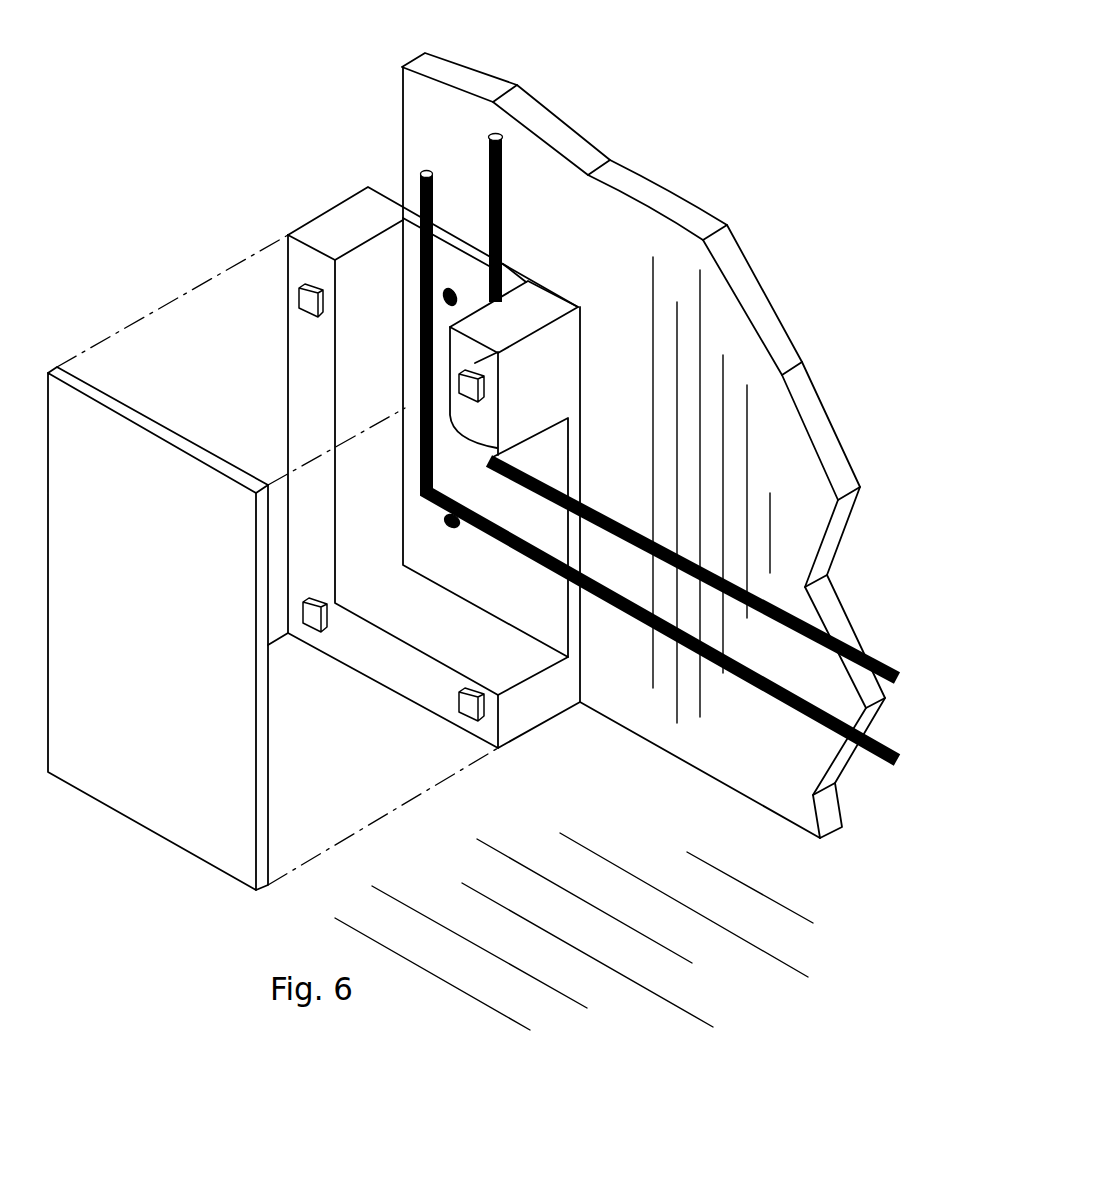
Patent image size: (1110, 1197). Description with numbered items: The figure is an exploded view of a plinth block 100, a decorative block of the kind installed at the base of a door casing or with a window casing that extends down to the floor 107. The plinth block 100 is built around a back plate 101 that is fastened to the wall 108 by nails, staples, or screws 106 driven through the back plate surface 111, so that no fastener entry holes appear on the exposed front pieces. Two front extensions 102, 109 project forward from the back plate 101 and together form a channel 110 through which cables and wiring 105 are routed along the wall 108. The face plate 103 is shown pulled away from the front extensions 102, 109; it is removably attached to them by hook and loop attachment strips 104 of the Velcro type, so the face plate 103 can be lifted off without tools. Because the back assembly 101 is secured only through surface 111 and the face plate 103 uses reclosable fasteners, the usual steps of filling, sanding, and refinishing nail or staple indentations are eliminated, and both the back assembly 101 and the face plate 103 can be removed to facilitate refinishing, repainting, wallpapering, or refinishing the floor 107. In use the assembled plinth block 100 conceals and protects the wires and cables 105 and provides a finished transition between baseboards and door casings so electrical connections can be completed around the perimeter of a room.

The plinth block 100 is at (168, 628).
The back plate 101 is at (590, 502).
The front extension 102 is at (287, 344).
The face plate 103 is at (149, 635).
The hook and loop attachment strips 104 is at (457, 387).
The cables and wiring 105 is at (757, 593).
The nails, staples, or screws 106 is at (450, 290).
The floor 107 is at (664, 827).
The wall 108 is at (804, 757).
The front extension 109 is at (554, 382).
The channel 110 is at (531, 592).
The back plate surface 111 is at (476, 489).